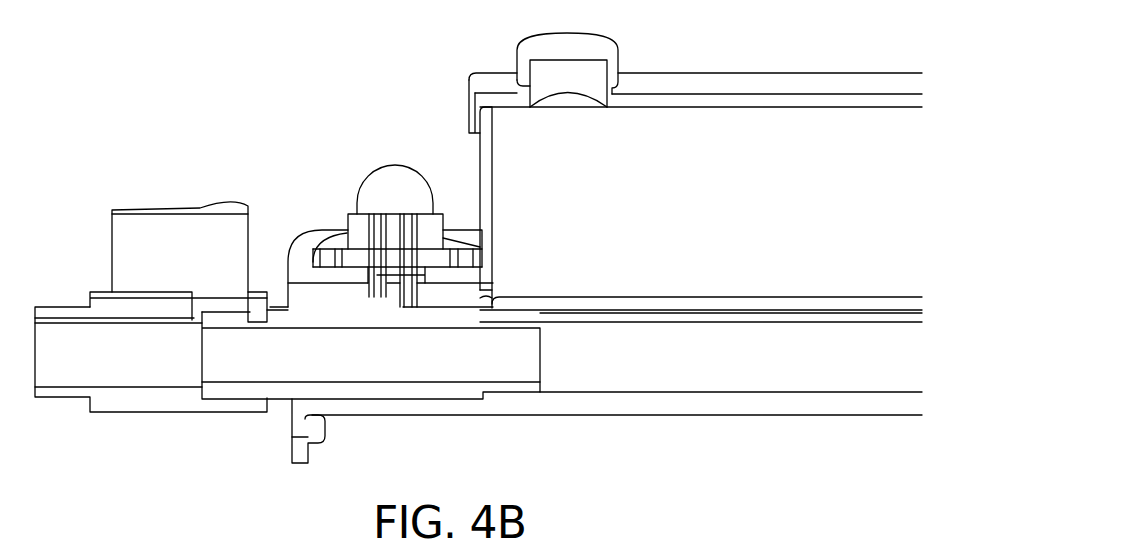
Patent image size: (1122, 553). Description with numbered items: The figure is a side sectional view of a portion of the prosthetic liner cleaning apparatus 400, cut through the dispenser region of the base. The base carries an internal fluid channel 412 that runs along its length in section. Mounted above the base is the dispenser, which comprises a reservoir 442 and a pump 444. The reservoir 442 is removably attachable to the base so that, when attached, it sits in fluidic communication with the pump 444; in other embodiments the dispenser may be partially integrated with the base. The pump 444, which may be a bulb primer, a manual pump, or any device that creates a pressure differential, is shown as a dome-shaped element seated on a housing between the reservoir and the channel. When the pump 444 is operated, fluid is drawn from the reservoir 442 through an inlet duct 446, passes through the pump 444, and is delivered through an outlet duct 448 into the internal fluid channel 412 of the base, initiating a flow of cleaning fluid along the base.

The cleaning apparatus 400 is at (107, 58).
The internal fluid channel 412 is at (318, 367).
The reservoir 442 is at (503, 110).
The pump 444 is at (377, 173).
The inlet duct 446 is at (412, 250).
The outlet duct 448 is at (372, 280).